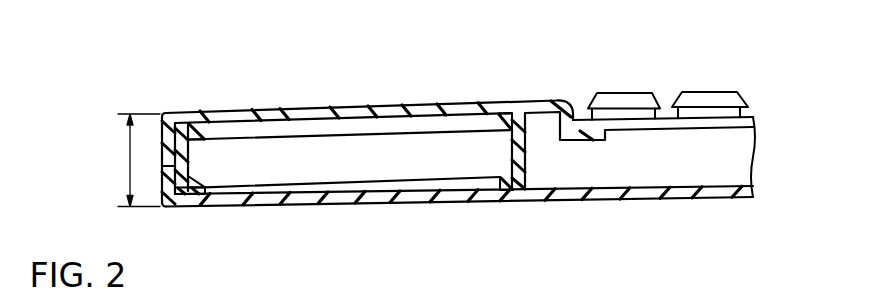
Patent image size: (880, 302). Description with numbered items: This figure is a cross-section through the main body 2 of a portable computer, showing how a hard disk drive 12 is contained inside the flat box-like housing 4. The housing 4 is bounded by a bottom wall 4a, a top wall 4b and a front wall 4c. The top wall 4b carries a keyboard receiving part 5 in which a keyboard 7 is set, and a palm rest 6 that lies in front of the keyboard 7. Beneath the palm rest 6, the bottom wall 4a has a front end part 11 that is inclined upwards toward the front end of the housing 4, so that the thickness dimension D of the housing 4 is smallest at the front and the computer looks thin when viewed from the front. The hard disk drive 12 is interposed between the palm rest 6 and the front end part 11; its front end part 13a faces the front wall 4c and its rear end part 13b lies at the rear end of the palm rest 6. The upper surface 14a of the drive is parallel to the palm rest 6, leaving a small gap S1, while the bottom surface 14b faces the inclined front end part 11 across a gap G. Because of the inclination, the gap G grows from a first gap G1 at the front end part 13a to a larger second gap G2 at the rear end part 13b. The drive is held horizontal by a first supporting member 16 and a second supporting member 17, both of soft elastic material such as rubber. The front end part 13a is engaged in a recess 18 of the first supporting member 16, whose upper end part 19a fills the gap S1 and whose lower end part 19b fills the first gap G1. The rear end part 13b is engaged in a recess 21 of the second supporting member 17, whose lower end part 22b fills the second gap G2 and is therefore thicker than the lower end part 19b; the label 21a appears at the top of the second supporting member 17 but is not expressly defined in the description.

The main body 2 is at (553, 69).
The housing 4 is at (712, 186).
The bottom wall 4a is at (637, 193).
The top wall 4b is at (433, 105).
The front wall 4c is at (164, 180).
The keyboard receiving part 5 is at (588, 108).
The palm rest 6 is at (318, 108).
The keyboard 7 is at (703, 92).
The front end part 11 is at (350, 200).
The hard disk drive 12 is at (365, 157).
The front end part 13a is at (197, 152).
The rear end part 13b is at (500, 142).
The upper surface 14a is at (270, 128).
The bottom surface 14b is at (305, 187).
The first supporting member 16 is at (163, 130).
The second supporting member 17 is at (526, 153).
The recess 18 is at (182, 197).
The upper end part 19a is at (195, 130).
The lower end part 19b is at (210, 194).
The recess 21 is at (526, 175).
The upper end of partition member 21a is at (504, 117).
The lower end part 22b is at (507, 190).
The gap G is at (388, 190).
The first gap G1 is at (220, 193).
The second gap G2 is at (489, 193).
The gap S1 is at (397, 122).
The thickness dimension D is at (134, 160).